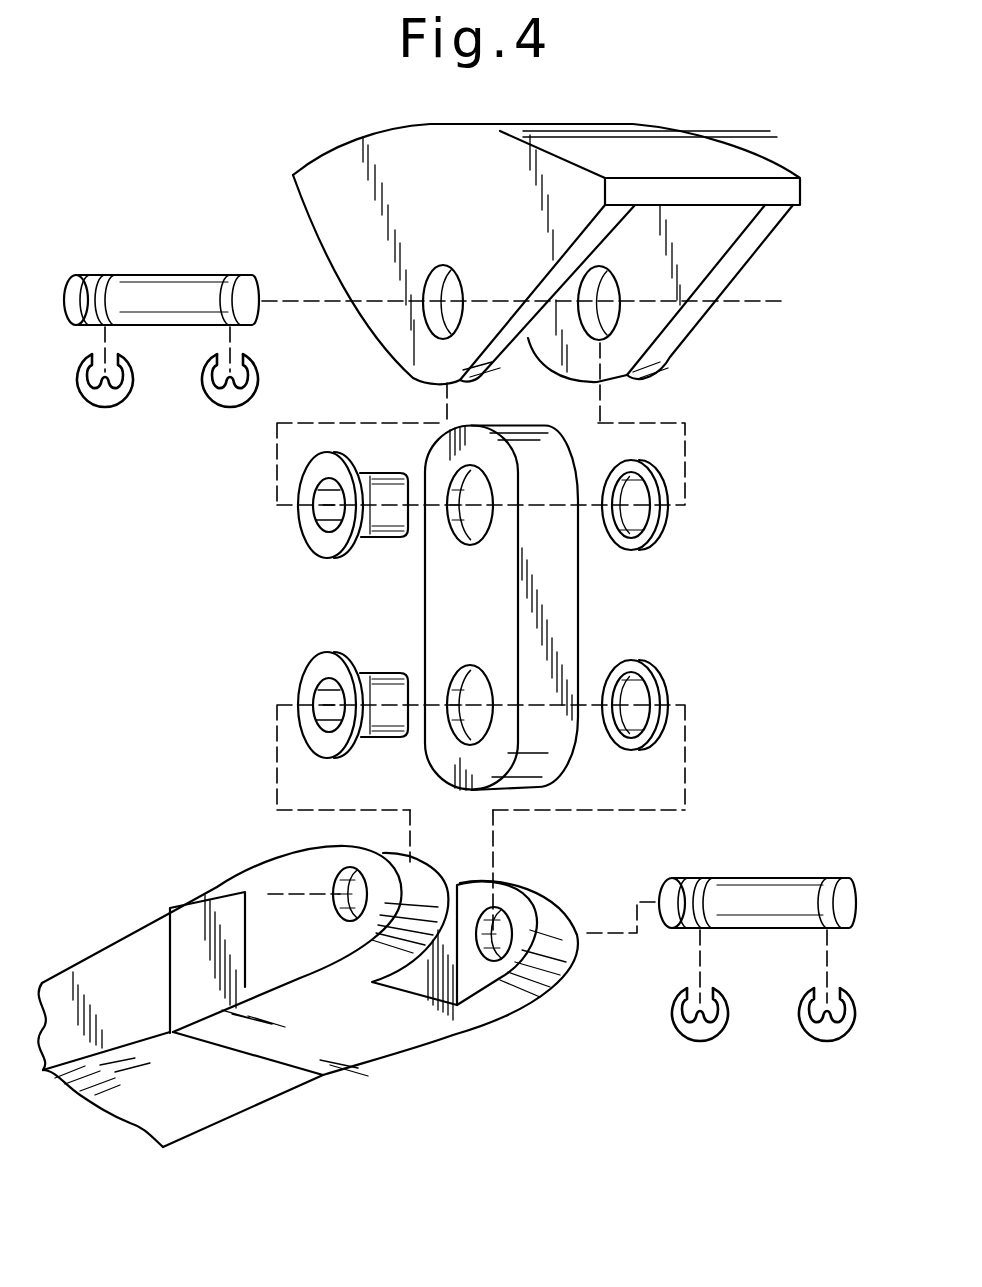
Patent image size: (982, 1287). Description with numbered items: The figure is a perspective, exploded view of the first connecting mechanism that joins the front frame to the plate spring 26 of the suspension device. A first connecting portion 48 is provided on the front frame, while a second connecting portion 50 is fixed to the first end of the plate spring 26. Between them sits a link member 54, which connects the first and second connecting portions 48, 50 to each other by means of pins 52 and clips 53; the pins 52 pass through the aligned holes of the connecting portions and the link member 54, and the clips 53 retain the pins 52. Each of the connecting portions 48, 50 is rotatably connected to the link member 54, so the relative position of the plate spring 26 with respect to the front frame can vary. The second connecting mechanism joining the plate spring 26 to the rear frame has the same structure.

The plate spring 26 is at (125, 983).
The first connecting portion 48 is at (696, 357).
The second connecting portion 50 is at (425, 1018).
The pin 52 is at (162, 293).
The clip 53 is at (102, 402).
The link member 54 is at (550, 607).